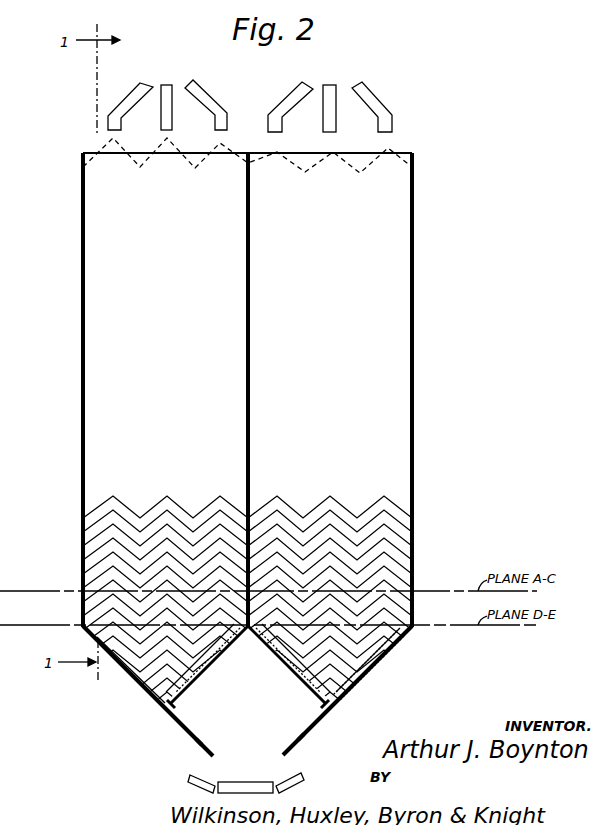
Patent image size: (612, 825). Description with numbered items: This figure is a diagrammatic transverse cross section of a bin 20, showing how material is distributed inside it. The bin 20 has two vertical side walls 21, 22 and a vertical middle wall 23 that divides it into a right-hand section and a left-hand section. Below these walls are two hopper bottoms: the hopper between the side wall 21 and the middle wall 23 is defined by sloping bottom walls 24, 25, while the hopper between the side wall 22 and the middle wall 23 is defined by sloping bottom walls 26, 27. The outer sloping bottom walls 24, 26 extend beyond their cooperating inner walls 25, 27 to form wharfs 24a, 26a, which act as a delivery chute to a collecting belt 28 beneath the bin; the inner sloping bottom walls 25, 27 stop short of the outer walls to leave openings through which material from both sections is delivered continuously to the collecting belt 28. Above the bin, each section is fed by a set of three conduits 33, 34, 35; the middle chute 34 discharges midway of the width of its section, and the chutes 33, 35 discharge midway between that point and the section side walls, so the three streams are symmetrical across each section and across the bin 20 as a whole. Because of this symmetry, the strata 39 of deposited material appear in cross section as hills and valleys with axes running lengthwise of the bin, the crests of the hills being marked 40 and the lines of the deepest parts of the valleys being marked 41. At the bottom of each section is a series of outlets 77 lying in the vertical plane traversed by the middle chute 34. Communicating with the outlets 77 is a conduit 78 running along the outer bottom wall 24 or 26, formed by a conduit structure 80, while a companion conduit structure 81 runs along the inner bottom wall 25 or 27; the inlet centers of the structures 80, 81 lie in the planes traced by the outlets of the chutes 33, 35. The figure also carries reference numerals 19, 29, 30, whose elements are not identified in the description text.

The partition plate 19 is at (195, 678).
The bin 20 is at (415, 292).
The vertical side wall 21 is at (415, 228).
The vertical side wall 22 is at (82, 270).
The vertical middle wall 23 is at (251, 258).
The sloping bottom wall 24 is at (393, 652).
The wharf 24a is at (300, 738).
The sloping bottom wall 25 is at (282, 642).
The sloping bottom wall 26 is at (108, 653).
The wharf 26a is at (201, 740).
The sloping bottom wall 27 is at (218, 655).
The collecting belt 28 is at (246, 781).
The gasket strip 29 is at (332, 708).
The gate foot 30 is at (172, 705).
The conduit 33 is at (212, 95).
The middle chute 34 is at (172, 106).
The conduit 35 is at (136, 91).
The strata 39 is at (397, 550).
The crests of hills 40 is at (160, 141).
The deepest parts of valleys 41 is at (195, 170).
The outlets 77 is at (360, 685).
The conduit 78 is at (309, 688).
The conduit structure 80 is at (132, 677).
The conduit structure 81 is at (297, 672).